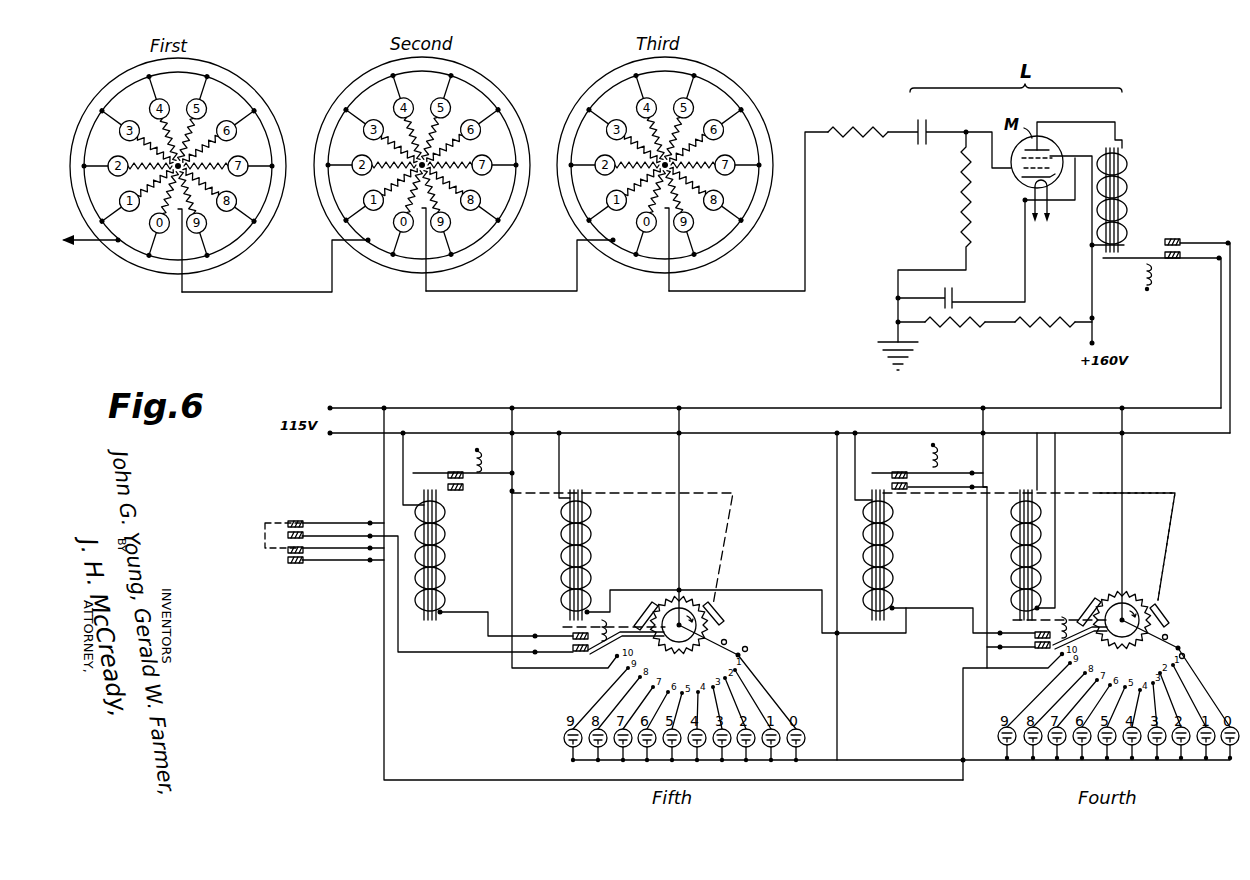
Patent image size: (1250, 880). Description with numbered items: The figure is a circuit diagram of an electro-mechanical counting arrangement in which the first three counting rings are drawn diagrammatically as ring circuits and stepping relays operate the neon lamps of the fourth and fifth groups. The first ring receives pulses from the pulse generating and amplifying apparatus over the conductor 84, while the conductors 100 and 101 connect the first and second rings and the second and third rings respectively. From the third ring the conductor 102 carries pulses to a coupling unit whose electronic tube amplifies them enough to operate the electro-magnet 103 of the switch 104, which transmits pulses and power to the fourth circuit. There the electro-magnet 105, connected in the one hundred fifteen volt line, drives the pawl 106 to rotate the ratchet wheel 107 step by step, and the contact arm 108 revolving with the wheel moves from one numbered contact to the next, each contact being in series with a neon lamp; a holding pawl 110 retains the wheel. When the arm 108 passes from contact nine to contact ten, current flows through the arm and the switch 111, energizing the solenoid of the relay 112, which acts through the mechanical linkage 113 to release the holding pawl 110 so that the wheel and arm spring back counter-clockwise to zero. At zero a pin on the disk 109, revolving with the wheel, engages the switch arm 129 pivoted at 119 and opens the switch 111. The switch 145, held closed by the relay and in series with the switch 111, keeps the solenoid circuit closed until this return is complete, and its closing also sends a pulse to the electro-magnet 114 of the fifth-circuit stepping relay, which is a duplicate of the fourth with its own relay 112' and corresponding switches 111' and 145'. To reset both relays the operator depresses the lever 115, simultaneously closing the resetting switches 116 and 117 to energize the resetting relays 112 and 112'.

The conductor 84 is at (88, 240).
The conductor 100 is at (271, 292).
The conductor 101 is at (514, 292).
The conductor 102 is at (739, 292).
The electro-magnet 103 is at (1128, 190).
The switch 104 is at (1164, 240).
The electro-magnet 105 is at (1041, 520).
The pawl 106 is at (1084, 618).
The ratchet wheel 107 is at (1113, 599).
The contact arm 108 is at (1181, 646).
The disk 109 is at (1127, 603).
The holding pawl 110 is at (1167, 610).
The switch 111 is at (1025, 650).
The contacts 111' is at (562, 653).
The relay 112 is at (900, 555).
The resetting relay 112' is at (451, 555).
The mechanical linkage 113 is at (1171, 480).
The electro-magnet 114 is at (585, 548).
The switch handle or lever 115 is at (258, 536).
The resetting switch 116 is at (304, 526).
The resetting switch 117 is at (303, 561).
The pivot 119 is at (998, 647).
The switch arm 129 is at (1089, 634).
The switch 145 is at (929, 466).
The contact armature 145' is at (462, 469).